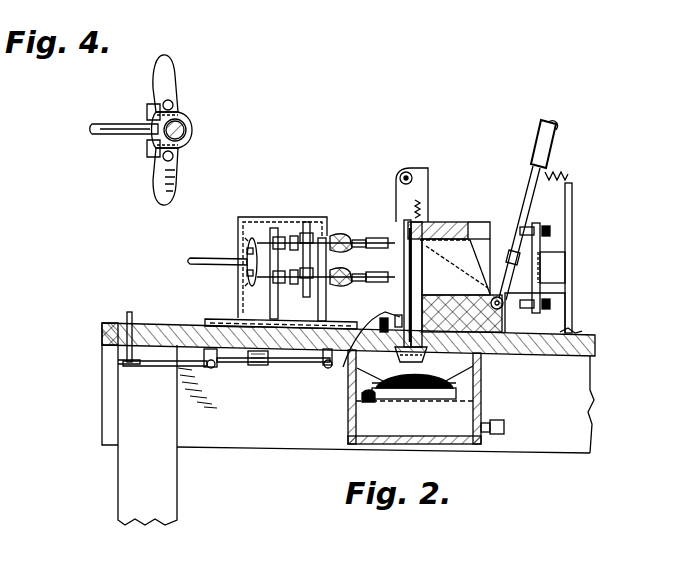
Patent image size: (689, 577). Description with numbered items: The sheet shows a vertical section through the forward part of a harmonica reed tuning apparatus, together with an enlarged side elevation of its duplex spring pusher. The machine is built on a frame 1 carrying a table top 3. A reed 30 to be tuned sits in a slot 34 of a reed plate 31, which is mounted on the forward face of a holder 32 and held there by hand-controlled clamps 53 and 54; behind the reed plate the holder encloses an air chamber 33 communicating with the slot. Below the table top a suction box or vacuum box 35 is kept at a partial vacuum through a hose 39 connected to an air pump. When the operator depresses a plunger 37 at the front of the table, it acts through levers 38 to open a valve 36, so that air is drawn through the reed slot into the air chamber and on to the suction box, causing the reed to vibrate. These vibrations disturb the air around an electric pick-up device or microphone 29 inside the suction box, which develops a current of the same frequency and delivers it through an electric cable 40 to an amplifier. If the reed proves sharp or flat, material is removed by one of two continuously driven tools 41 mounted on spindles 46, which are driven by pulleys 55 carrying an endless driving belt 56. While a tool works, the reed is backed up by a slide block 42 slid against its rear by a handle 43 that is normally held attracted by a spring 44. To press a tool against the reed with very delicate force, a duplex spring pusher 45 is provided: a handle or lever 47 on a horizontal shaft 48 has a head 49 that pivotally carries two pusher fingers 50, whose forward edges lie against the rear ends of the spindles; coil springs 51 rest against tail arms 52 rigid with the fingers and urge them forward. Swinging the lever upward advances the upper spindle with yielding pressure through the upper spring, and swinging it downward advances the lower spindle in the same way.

In FIG. 2, the frame 1 is at (170, 479).
In FIG. 2, the table top 3 is at (148, 323).
In FIG. 2, the electric pick-up device or microphone 29 is at (481, 440).
In FIG. 2, the reed 30 is at (404, 258).
In FIG. 2, the reed plate 31 is at (422, 234).
In FIG. 2, the holder 32 is at (448, 222).
In FIG. 2, the air chamber 33 is at (440, 270).
In FIG. 2, the slot 34 is at (408, 270).
In FIG. 2, the suction box or vacuum box 35 is at (448, 450).
In FIG. 2, the valve 36 is at (478, 371).
In FIG. 2, the plunger 37 is at (128, 312).
In FIG. 2, the levers 38 is at (293, 366).
In FIG. 2, the hose 39 is at (500, 420).
In FIG. 2, the electric cable 40 is at (368, 402).
In FIG. 2, the tools 41 is at (376, 238).
In FIG. 2, the slide block 42 is at (486, 238).
In FIG. 2, the handle 43 is at (543, 140).
In FIG. 2, the spring 44 is at (565, 176).
In FIG. 4, the duplex spring pusher 45 is at (187, 112).
In FIG. 2, the duplex spring pusher 45 is at (248, 270).
In FIG. 2, the spindles 46 is at (274, 228).
In FIG. 4, the handle or lever 47 is at (100, 136).
In FIG. 2, the handle or lever 47 is at (190, 261).
In FIG. 4, the horizontal shaft 48 is at (188, 137).
In FIG. 2, the horizontal shaft 48 is at (247, 253).
In FIG. 4, the head 49 is at (186, 130).
In FIG. 4, the pusher fingers 50 is at (173, 74).
In FIG. 2, the pusher fingers 50 is at (246, 217).
In FIG. 4, the coil springs 51 is at (162, 100).
In FIG. 4, the tail arms 52 is at (149, 110).
In FIG. 2, the tail arms 52 is at (250, 250).
In FIG. 2, the hand-controlled clamp 53 is at (402, 168).
In FIG. 2, the hand-controlled clamp 54 is at (347, 362).
In FIG. 2, the pulleys 55 is at (308, 235).
In FIG. 2, the endless driving belt 56 is at (304, 222).